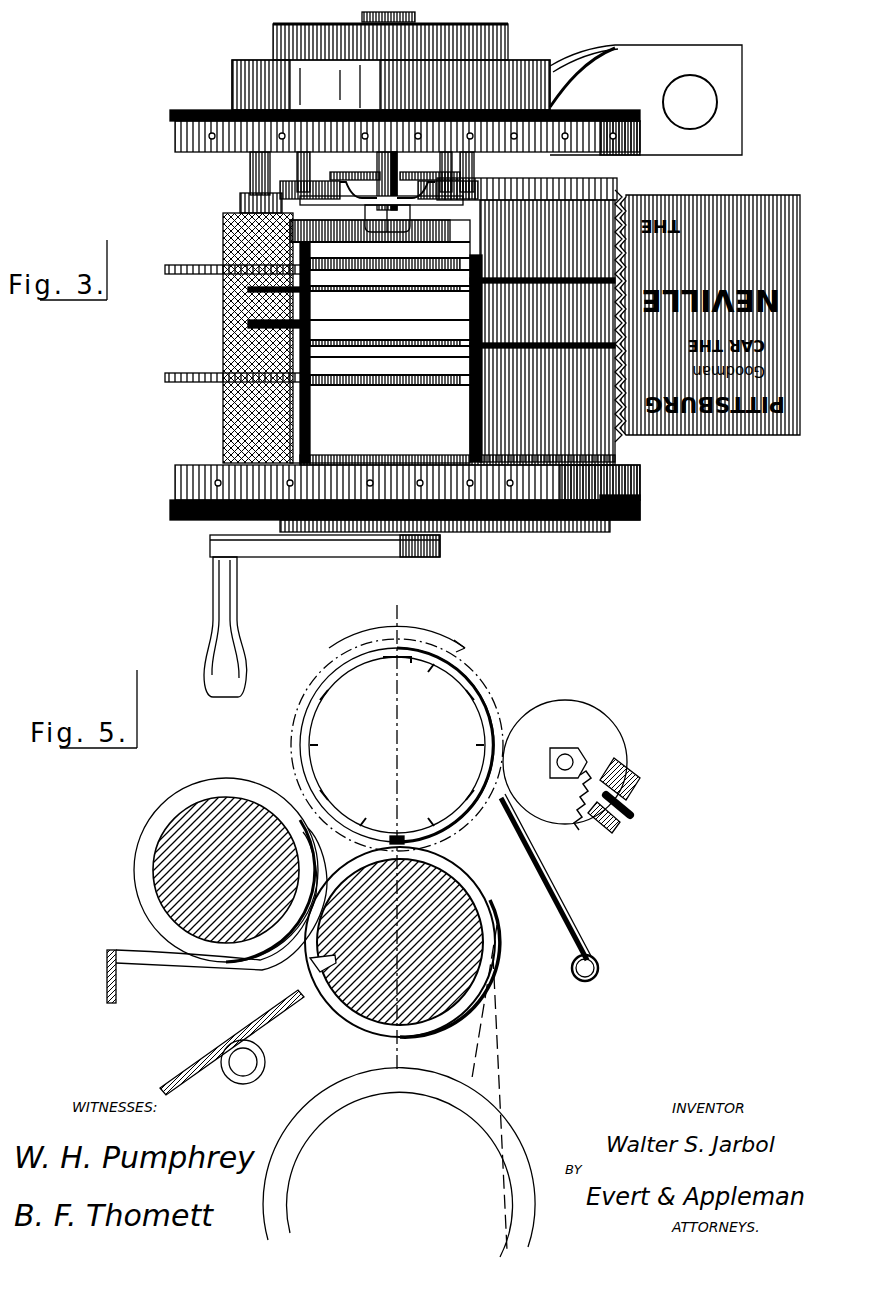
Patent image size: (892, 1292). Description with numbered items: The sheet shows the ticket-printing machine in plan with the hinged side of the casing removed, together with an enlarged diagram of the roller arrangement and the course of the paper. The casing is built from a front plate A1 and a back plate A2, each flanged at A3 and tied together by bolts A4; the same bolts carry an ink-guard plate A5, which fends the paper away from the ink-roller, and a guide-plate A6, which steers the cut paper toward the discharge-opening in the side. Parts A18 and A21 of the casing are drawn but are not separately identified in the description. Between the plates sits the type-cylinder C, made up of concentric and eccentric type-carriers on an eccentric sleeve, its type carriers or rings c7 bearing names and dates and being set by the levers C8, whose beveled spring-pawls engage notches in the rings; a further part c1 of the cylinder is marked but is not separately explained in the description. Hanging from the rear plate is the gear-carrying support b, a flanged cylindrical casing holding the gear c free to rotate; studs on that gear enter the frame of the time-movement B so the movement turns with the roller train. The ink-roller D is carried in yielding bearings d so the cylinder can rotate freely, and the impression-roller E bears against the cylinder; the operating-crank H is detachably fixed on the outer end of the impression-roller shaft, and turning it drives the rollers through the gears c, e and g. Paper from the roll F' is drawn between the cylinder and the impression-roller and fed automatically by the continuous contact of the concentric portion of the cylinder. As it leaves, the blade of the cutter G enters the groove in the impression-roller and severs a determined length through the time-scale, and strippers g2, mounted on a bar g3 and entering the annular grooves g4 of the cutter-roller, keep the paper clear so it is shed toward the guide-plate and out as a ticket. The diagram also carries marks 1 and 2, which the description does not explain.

In FIG. 3, the front plate A1 is at (172, 512).
In FIG. 3, the back plate A2 is at (170, 115).
In FIG. 3, the flange A3 is at (177, 150).
In FIG. 5, the bolts A4 is at (593, 968).
In FIG. 5, the ink-guard plate A5 is at (552, 893).
In FIG. 5, the guide-plate A6 is at (252, 1026).
In FIG. 3, the spindle pin A18 is at (378, 194).
In FIG. 3, the cap drum A21 is at (233, 73).
In FIG. 3, the time-movement B is at (400, 148).
In FIG. 3, the type-cylinder C is at (300, 353).
In FIG. 5, the type-cylinder C is at (397, 745).
In FIG. 3, the levers C8 is at (250, 290).
In FIG. 3, the ink-roller D is at (238, 242).
In FIG. 5, the ink-roller D is at (565, 762).
In FIG. 5, the impression-roller E is at (463, 913).
In FIG. 5, the ticket roll F' is at (399, 1162).
In FIG. 3, the cutter G is at (546, 326).
In FIG. 5, the cutter G is at (226, 851).
In FIG. 3, the operating-crank H is at (277, 548).
In FIG. 3, the gear-carrying support b is at (470, 206).
In FIG. 3, the gear c is at (455, 190).
In FIG. 3, the drum band c1 is at (472, 274).
In FIG. 3, the type carriers or rings c7 is at (472, 308).
In FIG. 5, the yielding bearings d is at (588, 770).
In FIG. 5, the gear e is at (322, 975).
In FIG. 5, the ticket path line f is at (502, 1004).
In FIG. 3, the gear g is at (522, 196).
In FIG. 5, the strippers g2 is at (215, 966).
In FIG. 5, the bar g3 is at (106, 989).
In FIG. 5, the annular grooves g4 is at (146, 886).
In FIG. 5, the axis line 1 is at (397, 837).
In FIG. 5, the stop notch 2 is at (442, 842).